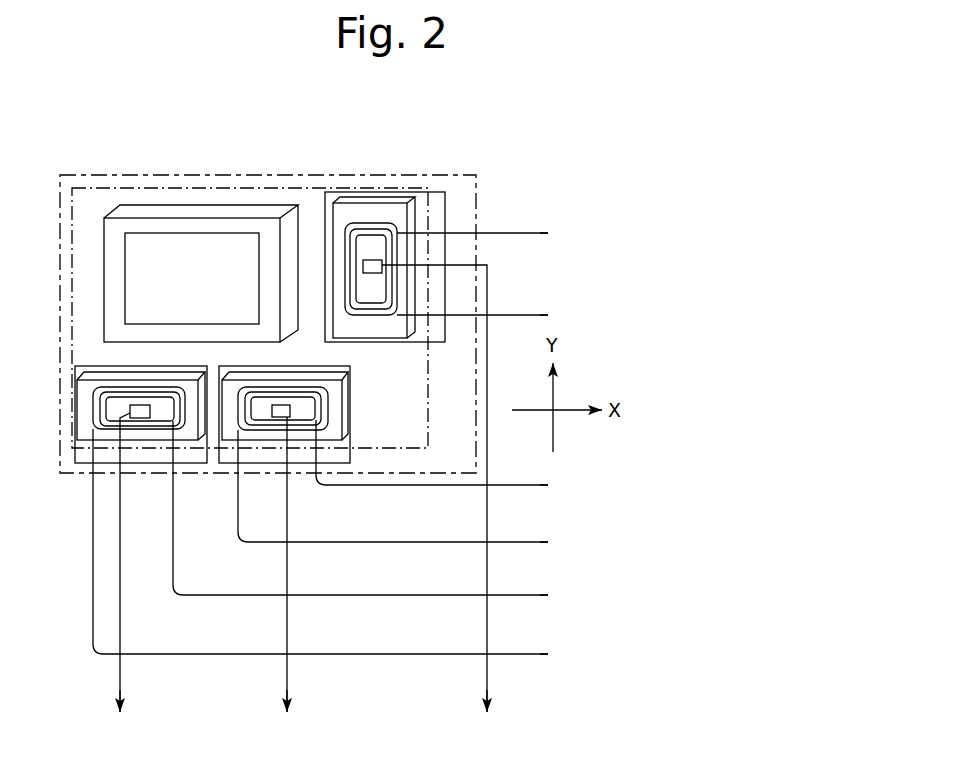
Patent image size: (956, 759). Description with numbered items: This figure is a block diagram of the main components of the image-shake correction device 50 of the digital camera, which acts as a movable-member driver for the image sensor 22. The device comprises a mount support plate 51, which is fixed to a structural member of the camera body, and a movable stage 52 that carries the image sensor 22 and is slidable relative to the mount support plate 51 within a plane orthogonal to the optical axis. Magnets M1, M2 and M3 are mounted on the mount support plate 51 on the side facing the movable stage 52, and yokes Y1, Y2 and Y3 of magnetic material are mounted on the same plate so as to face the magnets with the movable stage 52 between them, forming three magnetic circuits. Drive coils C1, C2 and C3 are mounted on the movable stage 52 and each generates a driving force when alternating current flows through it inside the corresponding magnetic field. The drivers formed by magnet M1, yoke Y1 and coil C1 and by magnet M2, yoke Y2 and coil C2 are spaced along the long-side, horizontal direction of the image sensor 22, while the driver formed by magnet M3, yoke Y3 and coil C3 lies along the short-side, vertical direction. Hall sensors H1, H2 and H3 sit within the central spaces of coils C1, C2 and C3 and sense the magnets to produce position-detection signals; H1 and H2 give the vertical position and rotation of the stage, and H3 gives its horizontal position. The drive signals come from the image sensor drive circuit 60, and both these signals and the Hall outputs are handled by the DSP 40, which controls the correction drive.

The image-shake correction device 50 is at (302, 160).
The mount support plate 51 is at (140, 174).
The movable stage 52 is at (79, 187).
The image sensor 22 is at (205, 228).
The magnet M1 is at (92, 372).
The drive coil C1 is at (93, 408).
The Hall sensor H1 is at (144, 418).
The yoke Y1 is at (85, 457).
The magnet M2 is at (346, 390).
The drive coil C2 is at (325, 412).
The Hall sensor H2 is at (278, 417).
The yoke Y2 is at (303, 457).
The magnet M3 is at (367, 199).
The drive coil C3 is at (382, 223).
The Hall sensor H3 is at (373, 273).
The yoke Y3 is at (437, 215).
The image sensor drive circuit 60 is at (655, 443).
The DSP 40 is at (315, 716).